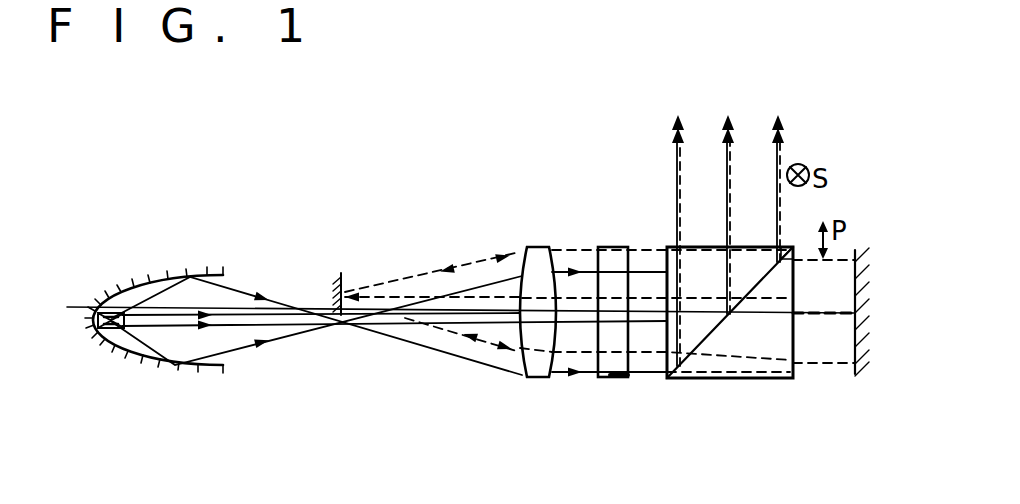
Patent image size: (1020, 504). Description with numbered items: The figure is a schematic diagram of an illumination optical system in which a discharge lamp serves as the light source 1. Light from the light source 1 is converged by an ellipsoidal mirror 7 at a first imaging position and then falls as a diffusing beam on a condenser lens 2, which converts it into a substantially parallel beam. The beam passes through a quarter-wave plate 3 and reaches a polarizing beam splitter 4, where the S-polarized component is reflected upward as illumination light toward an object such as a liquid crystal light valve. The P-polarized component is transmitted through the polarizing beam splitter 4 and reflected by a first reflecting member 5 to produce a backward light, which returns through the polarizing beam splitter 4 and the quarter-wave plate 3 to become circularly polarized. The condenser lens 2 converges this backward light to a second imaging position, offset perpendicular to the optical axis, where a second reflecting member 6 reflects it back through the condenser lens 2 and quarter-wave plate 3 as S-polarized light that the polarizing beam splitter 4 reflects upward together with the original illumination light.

The light source 1 is at (108, 330).
The condenser lens 2 is at (537, 379).
The quarter-wave plate 3 is at (615, 379).
The polarizing beam splitter 4 is at (712, 381).
The first reflecting member 5 is at (855, 376).
The second reflecting member 6 is at (343, 284).
The ellipsoidal mirror 7 is at (222, 368).